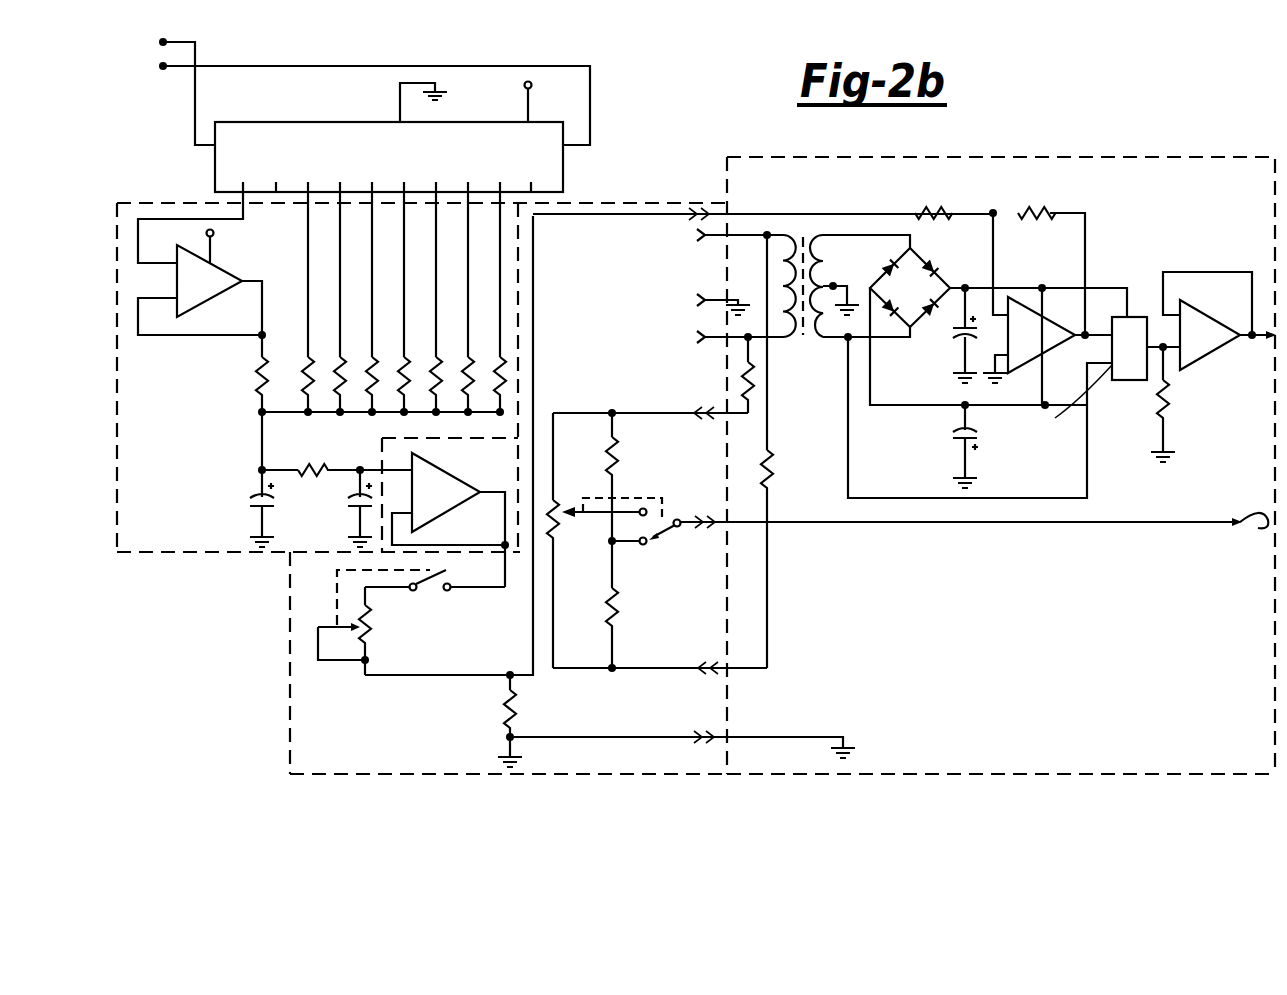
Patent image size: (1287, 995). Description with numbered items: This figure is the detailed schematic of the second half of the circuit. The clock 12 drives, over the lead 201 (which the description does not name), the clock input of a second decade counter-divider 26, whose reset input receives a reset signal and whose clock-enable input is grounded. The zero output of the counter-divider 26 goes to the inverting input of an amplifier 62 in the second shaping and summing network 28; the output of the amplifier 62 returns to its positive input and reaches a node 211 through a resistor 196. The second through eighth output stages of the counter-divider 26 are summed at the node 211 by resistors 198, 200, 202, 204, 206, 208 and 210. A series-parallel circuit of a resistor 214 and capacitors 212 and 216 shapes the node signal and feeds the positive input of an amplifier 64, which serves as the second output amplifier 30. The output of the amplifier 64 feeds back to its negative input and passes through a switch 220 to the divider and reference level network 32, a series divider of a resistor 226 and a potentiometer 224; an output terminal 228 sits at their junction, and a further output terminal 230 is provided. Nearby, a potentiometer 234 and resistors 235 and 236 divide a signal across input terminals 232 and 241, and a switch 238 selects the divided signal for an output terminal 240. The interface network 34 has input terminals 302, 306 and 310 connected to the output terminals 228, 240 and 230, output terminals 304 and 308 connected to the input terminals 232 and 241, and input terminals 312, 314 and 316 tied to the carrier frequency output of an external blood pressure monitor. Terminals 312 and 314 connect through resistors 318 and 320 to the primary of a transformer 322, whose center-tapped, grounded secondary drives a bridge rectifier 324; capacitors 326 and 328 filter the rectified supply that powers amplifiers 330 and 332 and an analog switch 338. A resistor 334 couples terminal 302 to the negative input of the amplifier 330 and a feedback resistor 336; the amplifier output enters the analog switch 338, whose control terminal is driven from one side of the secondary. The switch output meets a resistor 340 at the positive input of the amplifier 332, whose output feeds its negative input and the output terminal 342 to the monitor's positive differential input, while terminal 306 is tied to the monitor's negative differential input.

The clock 12 is at (125, 72).
The second decade counter-divider 26 is at (566, 164).
The second shaping and summing network 28 is at (520, 334).
The second output amplifier 30 is at (522, 468).
The divider and reference level network 32 is at (290, 712).
The interface network 34 is at (1052, 156).
The amplifier 62 is at (190, 330).
The amplifier 64 is at (442, 480).
The resistor 196 is at (256, 378).
The resistor 198 is at (302, 378).
The resistor 200 is at (336, 372).
The clock line 201 is at (178, 42).
The resistor 202 is at (182, 66).
The resistor 204 is at (400, 374).
The resistor 206 is at (434, 394).
The resistor 208 is at (440, 372).
The resistor 210 is at (496, 386).
The node 211 is at (260, 470).
The capacitor 212 is at (256, 504).
The resistor 214 is at (322, 468).
The capacitor 216 is at (354, 503).
The switch 220 is at (438, 590).
The potentiometer 224 is at (370, 630).
The resistor 226 is at (505, 700).
The output terminal 228 is at (688, 220).
The output terminal 230 is at (698, 734).
The input terminal 232 is at (700, 410).
The potentiometer 234 is at (555, 500).
The resistor 235 is at (618, 455).
The resistor 236 is at (618, 608).
The switch 238 is at (670, 515).
The output terminal 240 is at (718, 528).
The input terminal 241 is at (702, 667).
The input terminal 302 is at (722, 210).
The output terminal 304 is at (718, 415).
The input terminal 306 is at (745, 526).
The output terminal 308 is at (720, 667).
The input terminal 310 is at (717, 734).
The input terminal 312 is at (716, 242).
The input terminal 314 is at (704, 340).
The input terminal 316 is at (708, 298).
The resistor 318 is at (755, 388).
The resistor 320 is at (772, 460).
The transformer 322 is at (808, 250).
The bridge rectifier 324 is at (905, 262).
The capacitor 326 is at (957, 342).
The capacitor 328 is at (955, 432).
The amplifier 330 is at (1045, 320).
The amplifier 332 is at (1225, 302).
The resistor 334 is at (928, 206).
The feedback resistor 336 is at (1046, 206).
The analog switch 338 is at (1135, 317).
The resistor 340 is at (1158, 410).
The output terminal 342 is at (1252, 330).